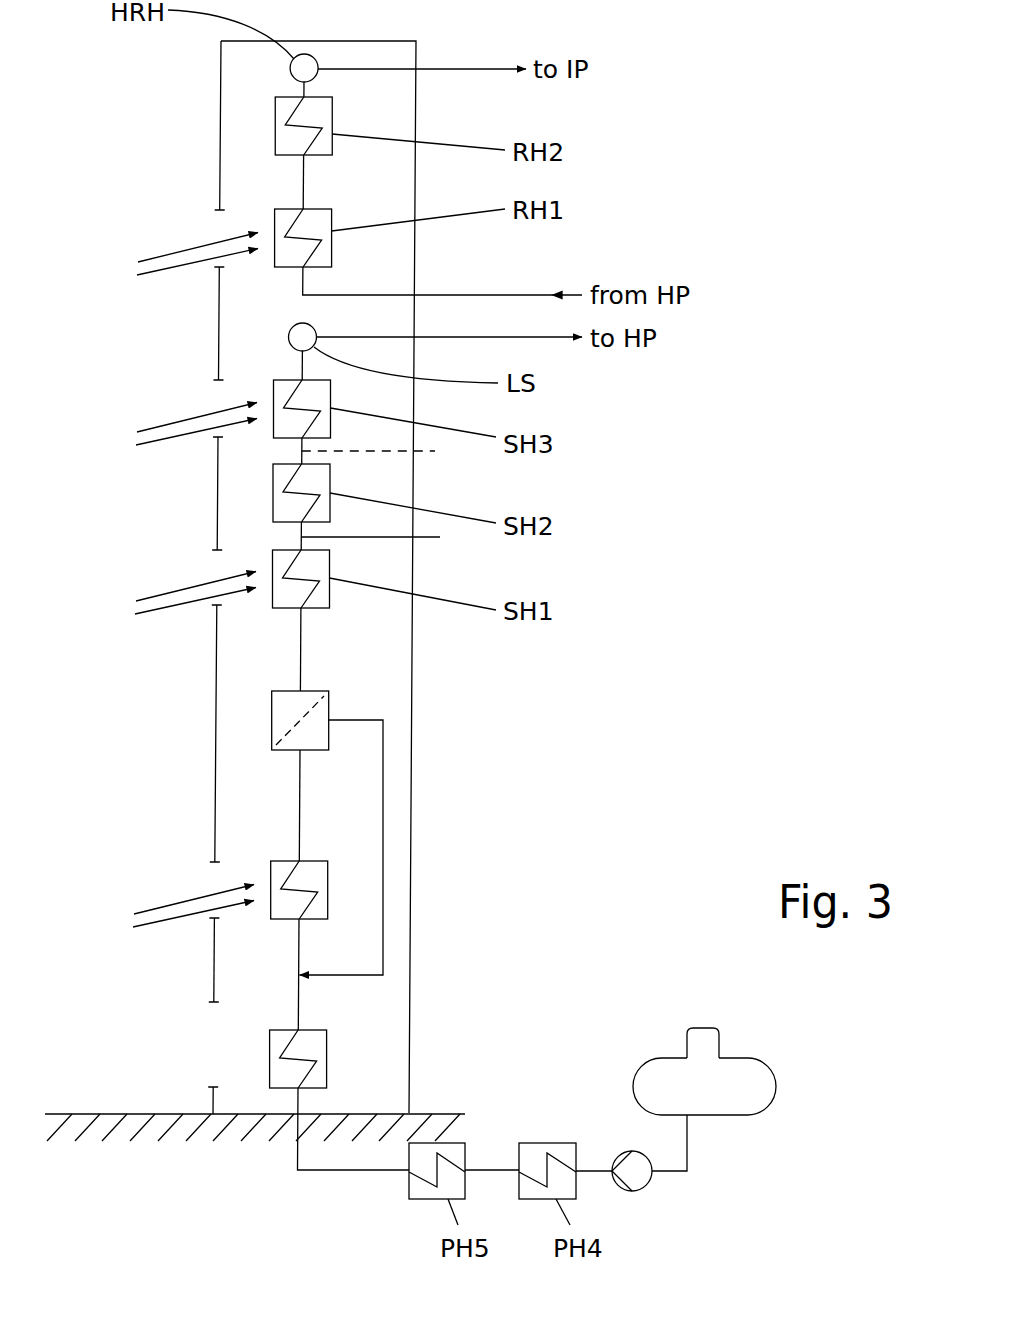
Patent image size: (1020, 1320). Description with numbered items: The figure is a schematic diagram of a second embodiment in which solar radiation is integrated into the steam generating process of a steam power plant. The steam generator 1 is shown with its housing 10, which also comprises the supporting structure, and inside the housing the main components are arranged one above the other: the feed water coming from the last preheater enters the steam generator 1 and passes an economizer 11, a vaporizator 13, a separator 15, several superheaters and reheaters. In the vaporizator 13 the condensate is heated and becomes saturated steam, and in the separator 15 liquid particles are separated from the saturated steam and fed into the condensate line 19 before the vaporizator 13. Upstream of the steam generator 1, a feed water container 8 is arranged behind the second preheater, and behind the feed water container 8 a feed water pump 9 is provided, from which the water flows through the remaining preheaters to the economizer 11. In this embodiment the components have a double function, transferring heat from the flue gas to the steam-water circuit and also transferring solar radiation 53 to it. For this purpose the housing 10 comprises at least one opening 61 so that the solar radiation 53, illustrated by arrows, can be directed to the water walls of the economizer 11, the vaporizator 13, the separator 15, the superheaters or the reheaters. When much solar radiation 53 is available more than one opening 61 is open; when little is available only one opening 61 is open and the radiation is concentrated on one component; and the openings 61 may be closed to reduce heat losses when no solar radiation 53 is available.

The steam generator 1 is at (604, 582).
The feed water container 8 is at (743, 1115).
The feed water pump 9 is at (645, 1187).
The housing 10 is at (214, 977).
The economizer 11 is at (327, 1046).
The vaporizator 13 is at (328, 878).
The separator 15 is at (272, 720).
The condensate line 19 is at (352, 1172).
The solar radiation 53 is at (158, 257).
The opening 61 is at (220, 210).